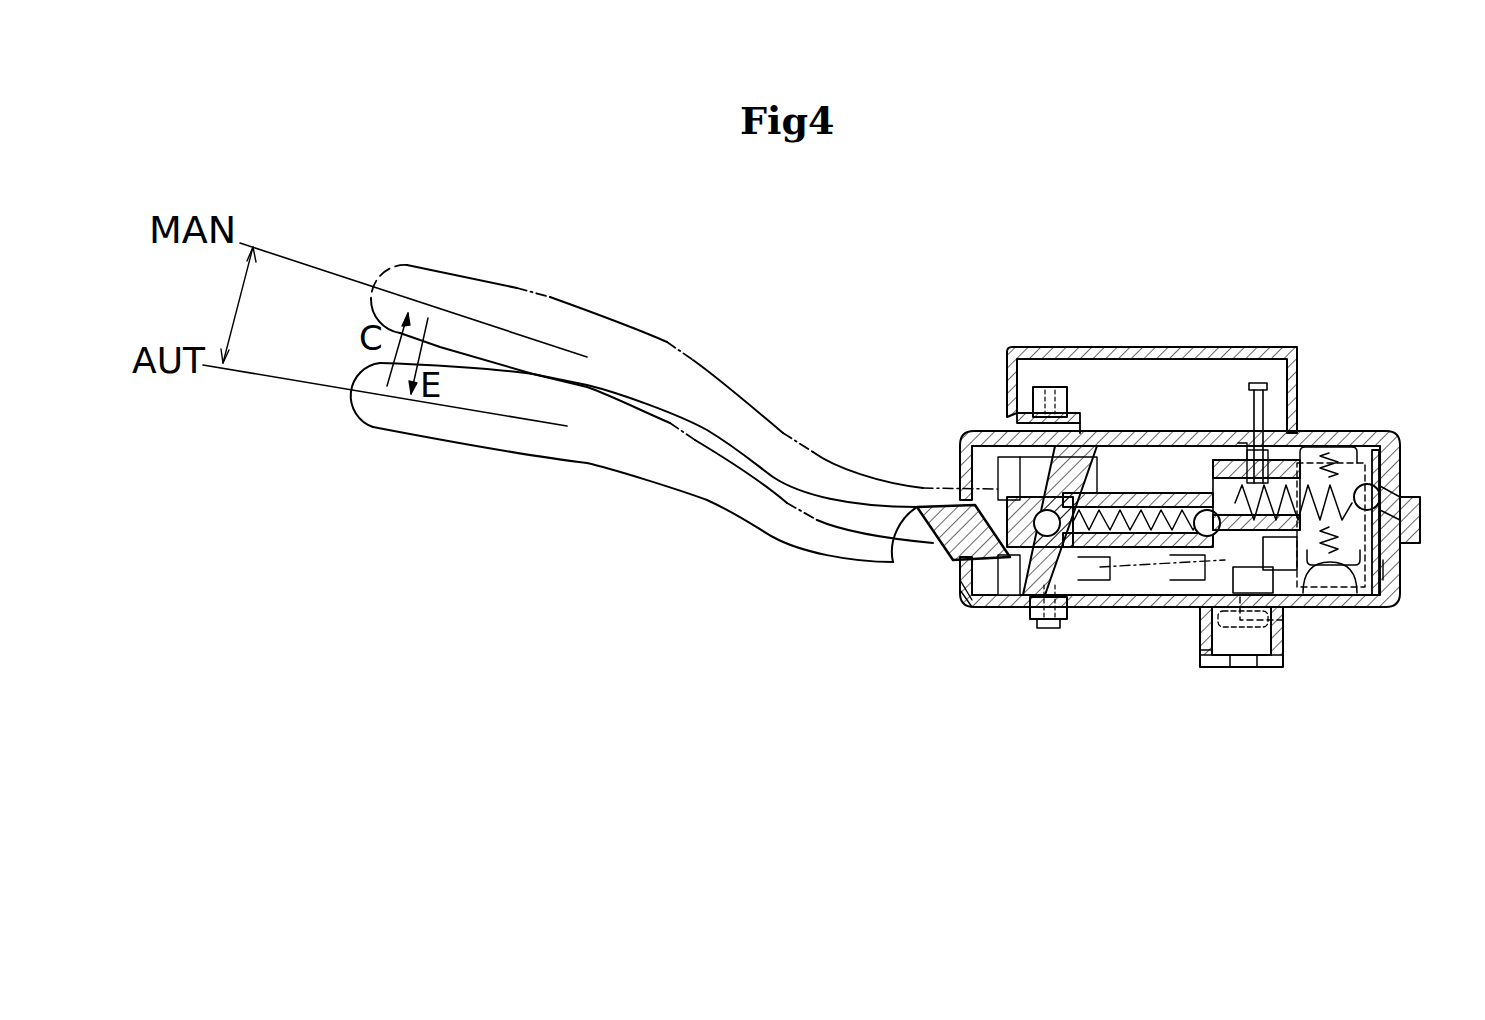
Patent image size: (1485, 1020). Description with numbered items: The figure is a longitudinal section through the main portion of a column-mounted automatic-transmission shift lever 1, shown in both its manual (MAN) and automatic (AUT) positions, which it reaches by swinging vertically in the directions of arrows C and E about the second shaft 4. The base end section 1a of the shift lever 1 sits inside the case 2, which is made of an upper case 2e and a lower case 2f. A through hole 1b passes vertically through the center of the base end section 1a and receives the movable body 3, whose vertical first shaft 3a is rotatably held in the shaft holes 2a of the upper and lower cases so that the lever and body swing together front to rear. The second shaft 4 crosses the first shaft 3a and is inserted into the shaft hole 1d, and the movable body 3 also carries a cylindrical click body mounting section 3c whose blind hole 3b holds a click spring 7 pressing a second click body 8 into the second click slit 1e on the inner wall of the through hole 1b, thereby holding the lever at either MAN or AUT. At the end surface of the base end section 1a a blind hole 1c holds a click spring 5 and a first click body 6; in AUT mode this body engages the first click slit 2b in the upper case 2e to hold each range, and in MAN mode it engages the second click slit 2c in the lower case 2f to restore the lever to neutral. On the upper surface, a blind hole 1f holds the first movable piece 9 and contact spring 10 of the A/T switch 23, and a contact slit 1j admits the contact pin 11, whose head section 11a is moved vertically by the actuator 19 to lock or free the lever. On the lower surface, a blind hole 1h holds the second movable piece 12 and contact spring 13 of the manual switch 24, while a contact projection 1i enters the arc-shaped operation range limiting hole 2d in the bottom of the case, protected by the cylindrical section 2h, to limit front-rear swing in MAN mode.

The shift lever 1 is at (604, 386).
The base end section 1a is at (1140, 431).
The through hole 1b is at (935, 540).
The blind hole 1c is at (1180, 602).
The shaft hole 1d is at (982, 613).
The second click slit 1e is at (1192, 445).
The blind hole 1f is at (1327, 440).
The blind hole 1h is at (1378, 565).
The contact projection 1i is at (1258, 614).
The contact slit 1j is at (1262, 448).
The case 2 is at (1005, 348).
The shaft holes 2a is at (1079, 358).
The first click slit 2b is at (1392, 458).
The second click slit 2c is at (1393, 598).
The operation range limiting hole 2d is at (1220, 663).
The upper case 2e is at (1050, 345).
The lower case 2f is at (962, 606).
The cylindrical section 2h is at (1210, 665).
The movable body 3 is at (1080, 565).
The first shaft 3a is at (1010, 440).
The blind hole 3b is at (1105, 560).
The click body mounting section 3c is at (1203, 562).
The second shaft 4 is at (948, 566).
The click spring 5 is at (1318, 440).
The first click body 6 is at (1372, 497).
The click spring 7 is at (1140, 533).
The second click body 8 is at (1200, 536).
The first movable piece 9 is at (1343, 444).
The contact spring 10 is at (1357, 447).
The contact pin 11 is at (1297, 445).
The head section 11a is at (1262, 382).
The second movable piece 12 is at (1305, 610).
The contact spring 13 is at (1355, 592).
The actuator 19 is at (965, 463).
The A/T switch 23 is at (1352, 440).
The manual switch 24 is at (1322, 605).